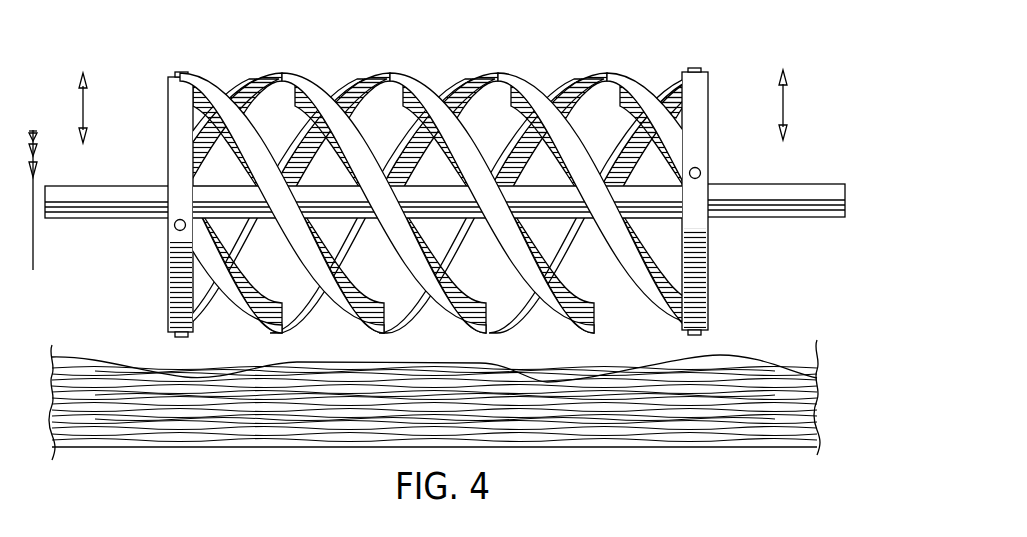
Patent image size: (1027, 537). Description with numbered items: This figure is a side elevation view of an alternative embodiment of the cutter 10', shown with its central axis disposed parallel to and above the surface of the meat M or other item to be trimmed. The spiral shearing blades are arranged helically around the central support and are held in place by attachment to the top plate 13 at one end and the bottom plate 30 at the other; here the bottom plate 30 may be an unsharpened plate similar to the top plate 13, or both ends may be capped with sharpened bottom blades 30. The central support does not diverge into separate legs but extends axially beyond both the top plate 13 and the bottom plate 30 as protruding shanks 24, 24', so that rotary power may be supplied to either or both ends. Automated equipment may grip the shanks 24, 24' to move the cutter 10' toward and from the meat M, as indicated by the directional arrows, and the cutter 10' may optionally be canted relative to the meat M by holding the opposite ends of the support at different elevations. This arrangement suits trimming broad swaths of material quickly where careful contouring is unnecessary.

The cutter 10' is at (432, 171).
The bottom plate 30 is at (177, 106).
The top plate 13 is at (711, 267).
The shank 24 is at (777, 170).
The shank 24' is at (107, 178).
The meat M is at (108, 360).